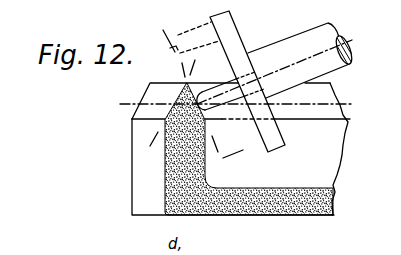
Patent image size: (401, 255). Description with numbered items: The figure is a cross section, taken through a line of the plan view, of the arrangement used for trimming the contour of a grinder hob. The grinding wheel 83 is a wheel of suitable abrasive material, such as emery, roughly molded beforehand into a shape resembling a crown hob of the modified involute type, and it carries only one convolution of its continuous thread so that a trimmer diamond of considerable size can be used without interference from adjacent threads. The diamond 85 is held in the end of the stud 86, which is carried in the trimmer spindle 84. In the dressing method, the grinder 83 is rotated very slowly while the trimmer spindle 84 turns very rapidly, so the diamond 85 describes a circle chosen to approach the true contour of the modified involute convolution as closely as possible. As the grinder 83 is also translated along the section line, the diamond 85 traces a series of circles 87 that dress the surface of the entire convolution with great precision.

The grinding wheel 83 is at (322, 157).
The trimmer spindle 84 is at (293, 44).
The diamond 85 is at (177, 51).
The stud 86 is at (216, 108).
The series of circles 87 is at (181, 68).